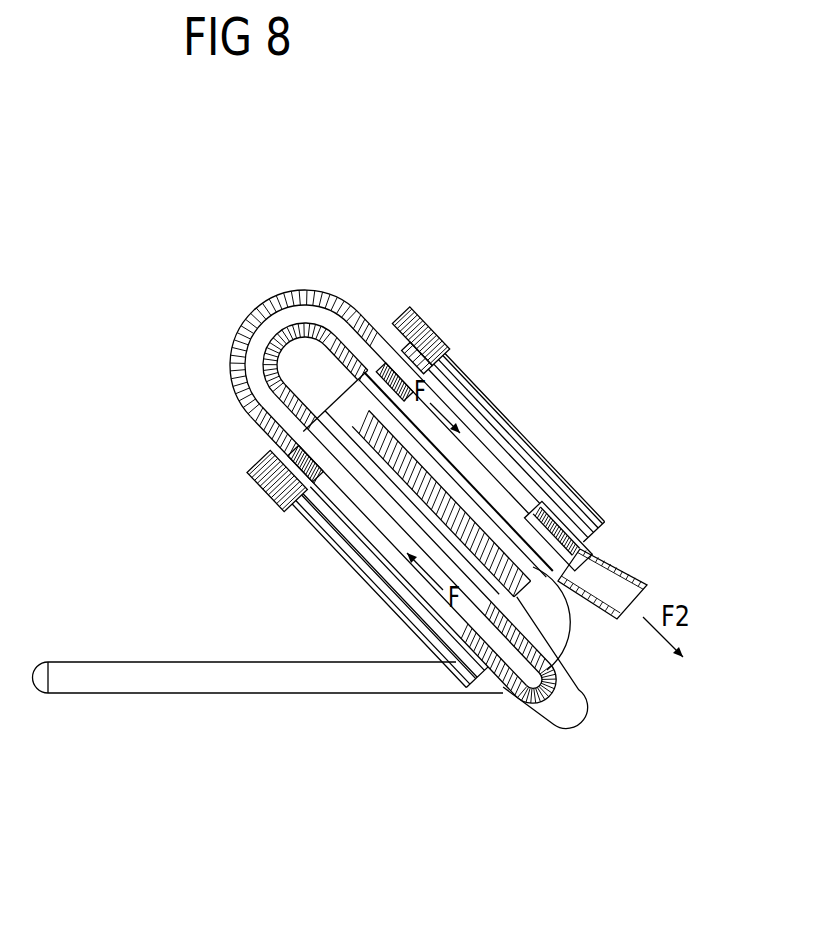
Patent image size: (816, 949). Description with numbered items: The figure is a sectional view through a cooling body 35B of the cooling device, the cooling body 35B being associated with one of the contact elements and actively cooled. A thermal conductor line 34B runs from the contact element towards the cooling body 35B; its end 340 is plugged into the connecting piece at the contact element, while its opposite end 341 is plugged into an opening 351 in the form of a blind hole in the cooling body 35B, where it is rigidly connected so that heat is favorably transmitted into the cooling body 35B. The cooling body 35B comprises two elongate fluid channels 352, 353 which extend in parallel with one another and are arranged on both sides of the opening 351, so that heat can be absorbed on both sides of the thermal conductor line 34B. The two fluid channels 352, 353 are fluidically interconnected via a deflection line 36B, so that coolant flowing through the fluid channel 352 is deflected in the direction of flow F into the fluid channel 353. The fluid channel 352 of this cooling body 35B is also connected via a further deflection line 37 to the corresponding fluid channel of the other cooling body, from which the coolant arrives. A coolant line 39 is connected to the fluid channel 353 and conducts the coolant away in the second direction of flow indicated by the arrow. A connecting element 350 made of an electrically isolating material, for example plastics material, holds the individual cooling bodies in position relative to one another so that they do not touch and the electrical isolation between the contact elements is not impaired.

The deflection line 36B is at (343, 293).
The connecting element 350 is at (418, 317).
The opening 351 is at (410, 352).
The fluid channel 353 is at (477, 440).
The fluid channel 352 is at (377, 528).
The cooling body 35B is at (517, 440).
The coolant line 39 is at (642, 572).
The end of the thermal conductor line 341 is at (480, 565).
The deflection line 37 is at (562, 722).
The thermal conductor line 34B is at (265, 683).
The end of the thermal conductor line 340 is at (62, 685).